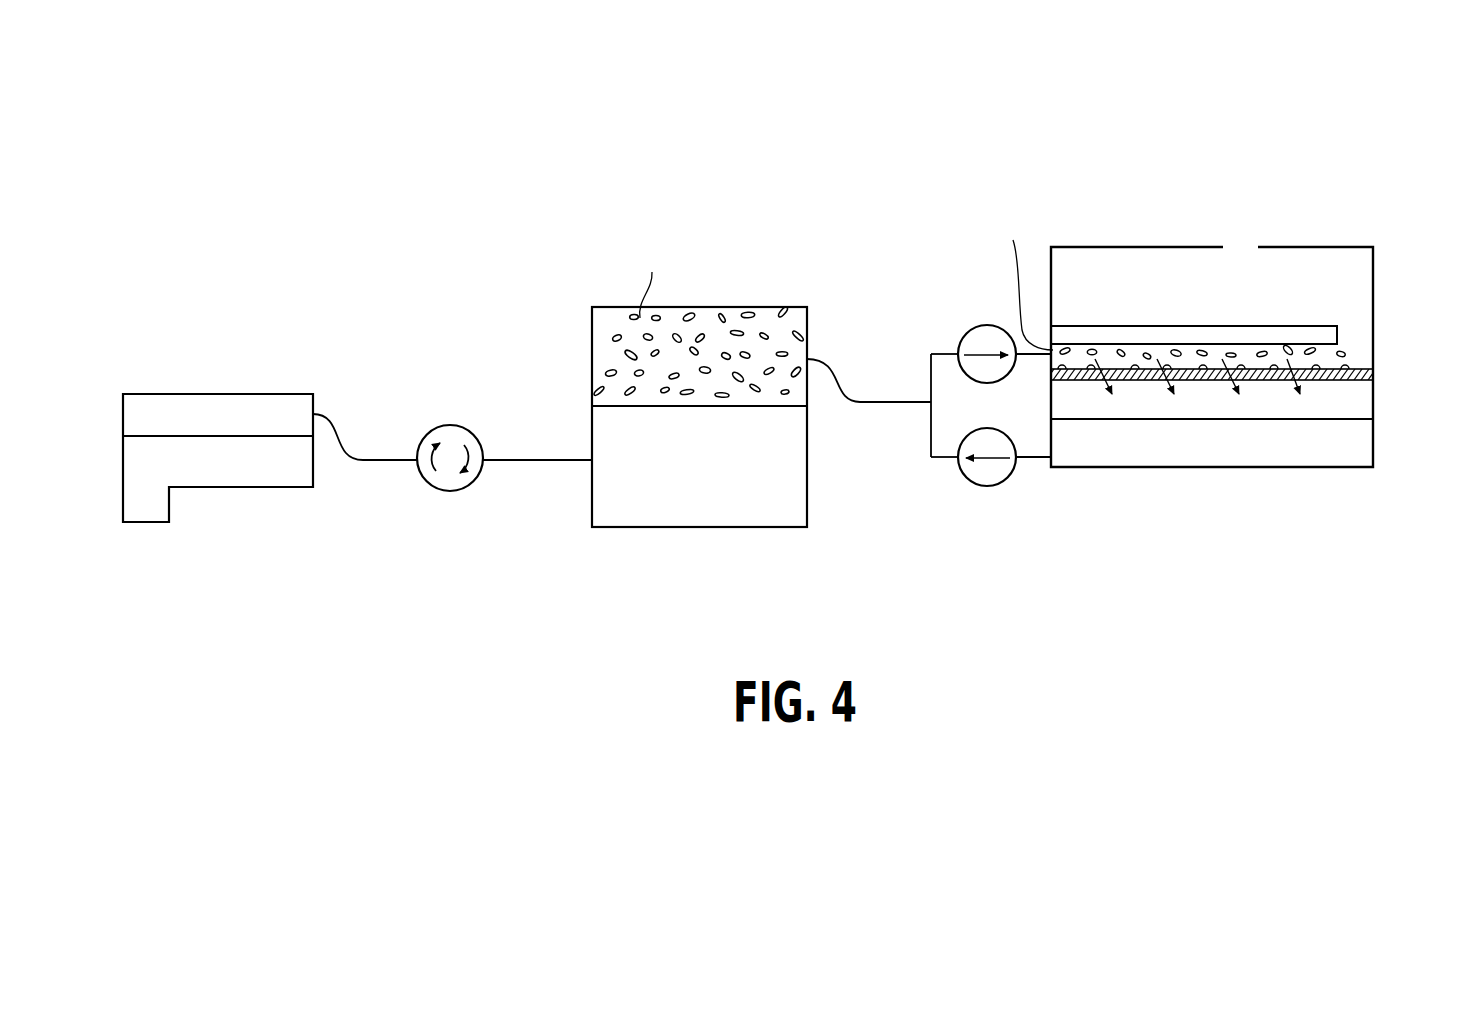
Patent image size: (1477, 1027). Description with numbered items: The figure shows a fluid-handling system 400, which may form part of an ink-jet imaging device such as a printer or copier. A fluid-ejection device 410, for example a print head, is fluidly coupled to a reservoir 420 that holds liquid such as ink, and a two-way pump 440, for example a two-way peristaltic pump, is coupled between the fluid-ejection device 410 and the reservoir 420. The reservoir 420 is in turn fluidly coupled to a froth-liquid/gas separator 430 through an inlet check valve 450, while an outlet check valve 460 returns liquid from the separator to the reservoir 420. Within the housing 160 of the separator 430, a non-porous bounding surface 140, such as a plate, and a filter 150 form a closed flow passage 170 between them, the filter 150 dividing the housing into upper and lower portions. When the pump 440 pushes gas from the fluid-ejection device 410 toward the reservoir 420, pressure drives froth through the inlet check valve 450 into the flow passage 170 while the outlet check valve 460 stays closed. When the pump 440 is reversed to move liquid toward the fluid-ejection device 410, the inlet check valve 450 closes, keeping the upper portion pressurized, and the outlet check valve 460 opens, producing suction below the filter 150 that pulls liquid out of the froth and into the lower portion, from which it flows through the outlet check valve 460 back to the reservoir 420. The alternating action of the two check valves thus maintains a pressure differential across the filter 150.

The fluid-handling system 400 is at (966, 107).
The fluid-ejection device 410 is at (234, 394).
The reservoir 420 is at (640, 528).
The froth-liquid/gas separator 430 is at (1198, 354).
The two-way pump 440 is at (451, 492).
The inlet check valve 450 is at (966, 336).
The outlet check valve 460 is at (966, 478).
The non-porous bounding surface 140 is at (1298, 336).
The filter 150 is at (1353, 382).
The housing 160 is at (1244, 250).
The closed flow passage 170 is at (1325, 357).